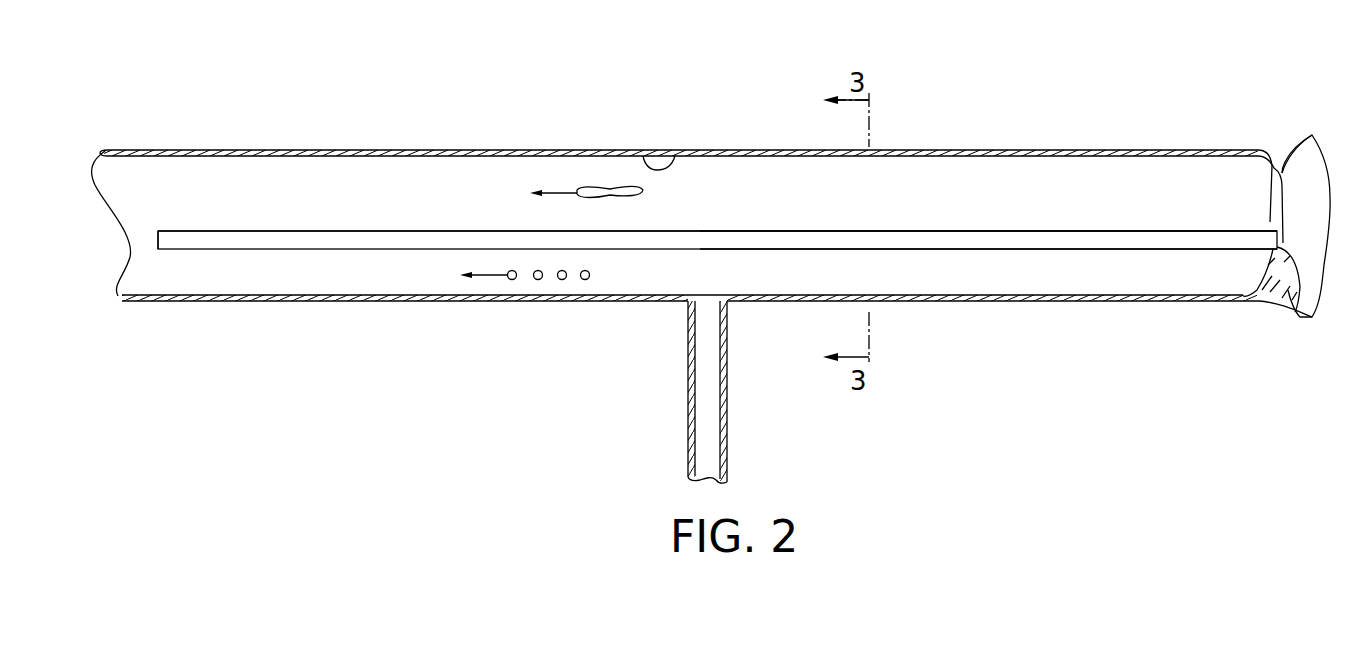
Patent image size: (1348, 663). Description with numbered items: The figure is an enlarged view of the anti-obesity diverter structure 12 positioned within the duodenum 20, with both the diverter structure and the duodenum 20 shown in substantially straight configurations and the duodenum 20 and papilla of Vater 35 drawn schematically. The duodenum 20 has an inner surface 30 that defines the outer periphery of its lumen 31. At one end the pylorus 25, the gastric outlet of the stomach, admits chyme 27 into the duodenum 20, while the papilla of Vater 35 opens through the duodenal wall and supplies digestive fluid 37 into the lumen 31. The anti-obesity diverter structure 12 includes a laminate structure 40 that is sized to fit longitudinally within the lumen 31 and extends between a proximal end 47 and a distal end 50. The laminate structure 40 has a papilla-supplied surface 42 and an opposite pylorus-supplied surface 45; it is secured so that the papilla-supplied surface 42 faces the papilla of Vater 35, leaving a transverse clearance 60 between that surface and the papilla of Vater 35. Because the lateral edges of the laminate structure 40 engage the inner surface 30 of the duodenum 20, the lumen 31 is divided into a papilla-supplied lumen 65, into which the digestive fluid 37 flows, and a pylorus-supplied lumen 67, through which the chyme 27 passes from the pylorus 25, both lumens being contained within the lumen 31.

The anti-obesity diverter structure 12 is at (257, 220).
The duodenum 20 is at (530, 140).
The pylorus 25 is at (1277, 168).
The chyme 27 is at (605, 190).
The inner surface 30 is at (673, 156).
The lumen 31 is at (117, 187).
The papilla of Vater 35 is at (693, 408).
The digestive fluid 37 is at (512, 280).
The laminate structure 40 is at (196, 220).
The papilla-supplied surface 42 is at (1035, 252).
The pylorus-supplied surface 45 is at (963, 230).
The proximal end 47 is at (1292, 280).
The distal end 50 is at (158, 238).
The transverse clearance 60 is at (710, 280).
The papilla-supplied lumen 65 is at (627, 278).
The pylorus-supplied lumen 67 is at (385, 177).